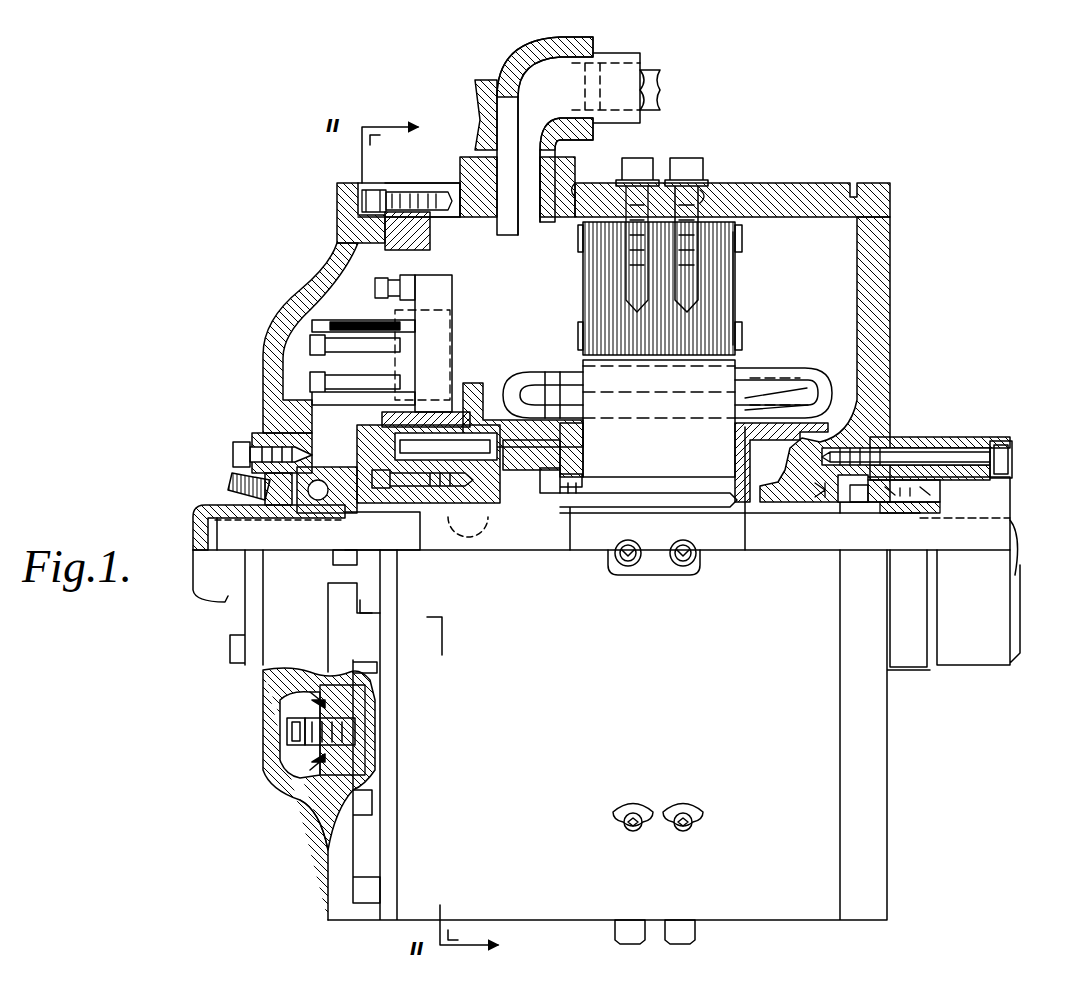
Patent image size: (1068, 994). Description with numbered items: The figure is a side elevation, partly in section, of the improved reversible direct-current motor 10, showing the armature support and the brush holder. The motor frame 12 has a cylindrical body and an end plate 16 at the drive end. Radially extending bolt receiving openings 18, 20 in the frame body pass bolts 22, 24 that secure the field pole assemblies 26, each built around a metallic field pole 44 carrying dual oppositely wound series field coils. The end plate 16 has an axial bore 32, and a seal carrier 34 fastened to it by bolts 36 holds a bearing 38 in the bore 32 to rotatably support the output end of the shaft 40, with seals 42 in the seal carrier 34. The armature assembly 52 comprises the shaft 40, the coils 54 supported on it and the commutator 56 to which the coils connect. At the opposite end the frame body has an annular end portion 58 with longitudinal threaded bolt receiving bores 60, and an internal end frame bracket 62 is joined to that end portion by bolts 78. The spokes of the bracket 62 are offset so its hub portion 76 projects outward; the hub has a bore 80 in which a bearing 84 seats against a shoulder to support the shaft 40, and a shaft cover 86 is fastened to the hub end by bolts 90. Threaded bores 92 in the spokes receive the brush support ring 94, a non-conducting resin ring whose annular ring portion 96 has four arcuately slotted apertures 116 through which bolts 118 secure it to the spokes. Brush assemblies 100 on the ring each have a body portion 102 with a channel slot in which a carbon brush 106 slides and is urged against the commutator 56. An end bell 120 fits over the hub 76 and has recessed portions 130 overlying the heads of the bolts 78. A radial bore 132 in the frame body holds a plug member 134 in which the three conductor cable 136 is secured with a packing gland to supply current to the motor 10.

The reversible D.C. motor 10 is at (778, 165).
The motor frame 12 is at (808, 183).
The end plate 16 is at (890, 288).
The bolt receiving opening 18 is at (708, 188).
The bolt receiving opening 20 is at (620, 184).
The bolt 22 is at (680, 158).
The bolt 24 is at (630, 158).
The field pole assembly 26 is at (746, 256).
The axial bore 32 is at (890, 440).
The seal carrier 34 is at (950, 437).
The bolt 36 is at (1012, 455).
The bearing 38 is at (852, 495).
The shaft 40 is at (215, 505).
The seal 42 is at (922, 500).
The field pole 44 is at (738, 305).
The armature assembly 52 is at (765, 366).
The coil 54 is at (812, 372).
The commutator 56 is at (472, 388).
The annular end portion 58 is at (402, 192).
The threaded bolt receiving bore 60 is at (415, 193).
The internal end frame bracket 62 is at (422, 240).
The hub portion 76 is at (268, 662).
The bolt 78 is at (370, 190).
The bore 80 is at (400, 513).
The bearing 84 is at (330, 497).
The shaft cover 86 is at (234, 602).
The bolt 90 is at (238, 442).
The threaded bore 92 is at (358, 732).
The brush support ring 94 is at (352, 330).
The annular ring portion 96 is at (300, 795).
The brush assembly 100 is at (450, 354).
The body portion 102 is at (452, 298).
The carbon brush 106 is at (400, 405).
The arcuately slotted aperture 116 is at (300, 760).
The bolt 118 is at (288, 734).
The end bell 120 is at (266, 334).
The recessed portion 130 is at (340, 210).
The radial bore 132 is at (576, 190).
The plug member 134 is at (545, 222).
The three conductor cable 136 is at (518, 237).